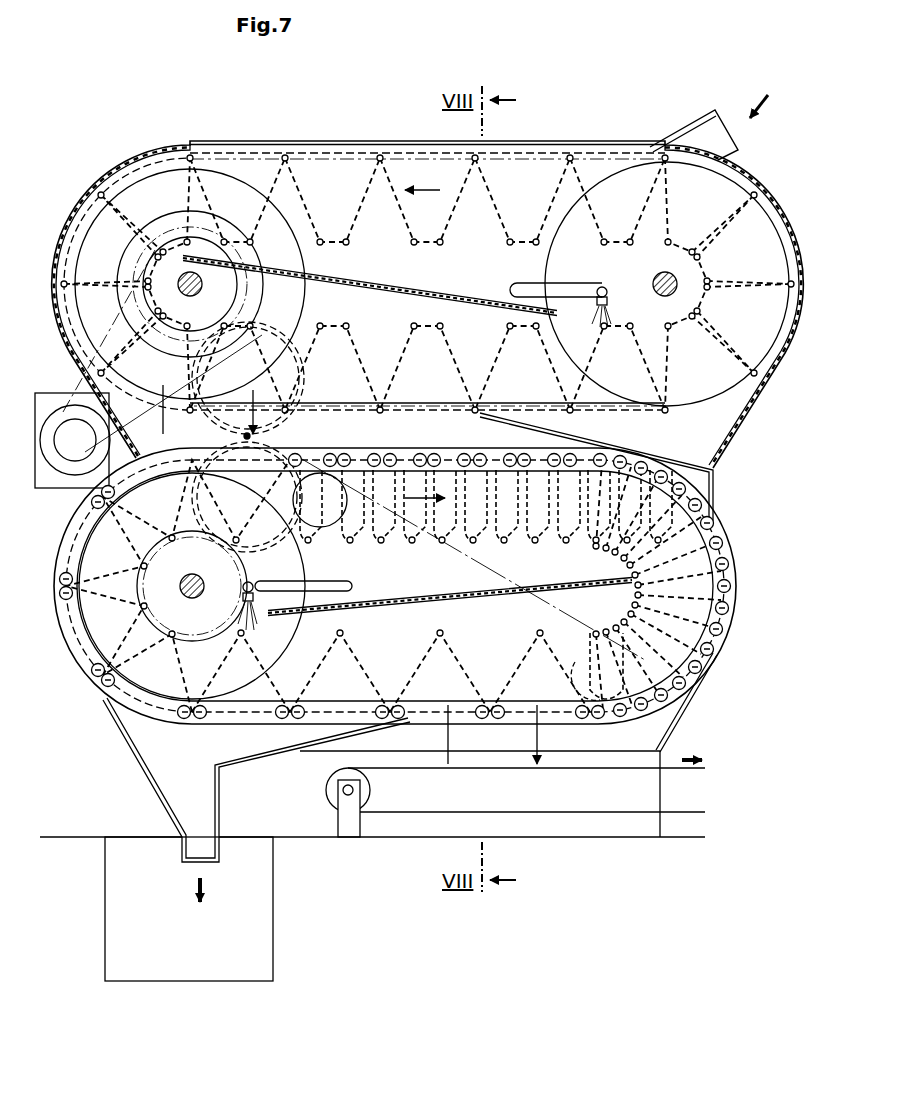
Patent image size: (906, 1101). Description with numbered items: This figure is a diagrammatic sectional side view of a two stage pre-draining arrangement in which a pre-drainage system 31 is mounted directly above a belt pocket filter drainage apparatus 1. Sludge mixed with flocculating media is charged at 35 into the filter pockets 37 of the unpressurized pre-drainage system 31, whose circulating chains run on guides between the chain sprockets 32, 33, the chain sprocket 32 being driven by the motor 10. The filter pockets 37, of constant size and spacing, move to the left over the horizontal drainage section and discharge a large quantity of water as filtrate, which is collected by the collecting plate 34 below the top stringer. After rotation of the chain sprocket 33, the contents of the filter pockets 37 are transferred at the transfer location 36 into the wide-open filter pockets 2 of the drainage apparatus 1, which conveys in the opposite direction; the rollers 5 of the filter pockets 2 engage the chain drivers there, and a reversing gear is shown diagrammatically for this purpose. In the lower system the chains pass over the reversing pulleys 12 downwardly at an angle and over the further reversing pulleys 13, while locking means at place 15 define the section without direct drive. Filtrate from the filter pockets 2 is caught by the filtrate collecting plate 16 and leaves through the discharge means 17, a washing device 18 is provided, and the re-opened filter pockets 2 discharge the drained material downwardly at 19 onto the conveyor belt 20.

The drainage apparatus 1 is at (718, 522).
The filter pockets 2 is at (272, 518).
The rollers 5 is at (424, 452).
The motor 10 is at (52, 418).
The reversing pulleys 12 is at (325, 470).
The further reversing pulleys 13 is at (582, 680).
The locking means location 15 is at (602, 724).
The filtrate collecting plate 16 is at (408, 600).
The discharge means for the filtrate 17 is at (182, 866).
The washing device 18 is at (334, 580).
The discharge location 19 is at (448, 742).
The conveyor belt 20 is at (538, 818).
The pre-drainage system 31 is at (236, 142).
The chain sprocket 32 is at (170, 165).
The chain sprocket 33 is at (628, 185).
The collecting plate 34 is at (352, 284).
The sludge feed point 35 is at (768, 95).
The transfer location 36 is at (164, 420).
The filter pockets 37 is at (326, 168).